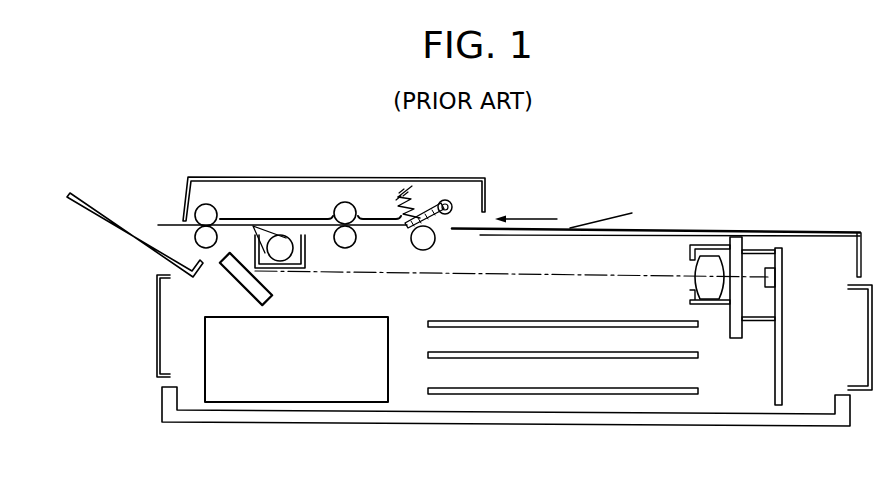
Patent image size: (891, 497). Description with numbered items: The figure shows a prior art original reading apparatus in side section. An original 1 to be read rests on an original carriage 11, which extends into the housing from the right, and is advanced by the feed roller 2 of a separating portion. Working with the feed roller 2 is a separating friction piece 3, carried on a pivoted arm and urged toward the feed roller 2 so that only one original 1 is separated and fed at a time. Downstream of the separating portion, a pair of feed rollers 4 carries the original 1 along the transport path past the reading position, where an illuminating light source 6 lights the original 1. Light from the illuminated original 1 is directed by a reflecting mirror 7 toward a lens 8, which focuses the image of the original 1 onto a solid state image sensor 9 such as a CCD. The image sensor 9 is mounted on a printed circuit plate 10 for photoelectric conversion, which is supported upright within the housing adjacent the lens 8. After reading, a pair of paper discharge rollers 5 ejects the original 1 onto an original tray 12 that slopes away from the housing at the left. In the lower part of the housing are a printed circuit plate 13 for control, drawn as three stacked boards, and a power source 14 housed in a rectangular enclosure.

The original 1 is at (605, 227).
The feed roller of the separating portion 2 is at (435, 242).
The separating friction piece 3 is at (451, 217).
The pair of feed rollers 4 is at (351, 238).
The pair of paper discharge rollers 5 is at (212, 237).
The illuminating light source 6 is at (287, 250).
The reflecting mirror 7 is at (228, 273).
The lens 8 is at (694, 266).
The solid state image sensor 9 is at (782, 273).
The printed circuit plate for photoelectric conversion 10 is at (783, 304).
The original carriage 11 is at (663, 228).
The original tray 12 is at (92, 198).
The printed circuit plate for control 13 is at (698, 326).
The power source 14 is at (302, 388).